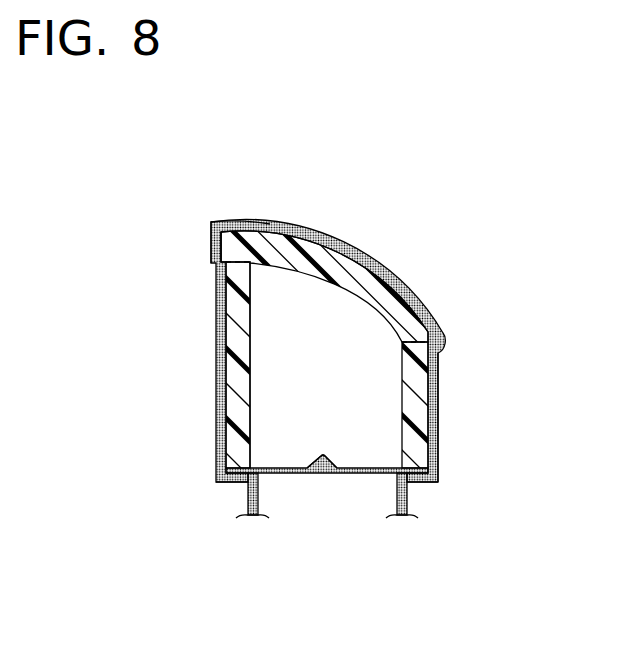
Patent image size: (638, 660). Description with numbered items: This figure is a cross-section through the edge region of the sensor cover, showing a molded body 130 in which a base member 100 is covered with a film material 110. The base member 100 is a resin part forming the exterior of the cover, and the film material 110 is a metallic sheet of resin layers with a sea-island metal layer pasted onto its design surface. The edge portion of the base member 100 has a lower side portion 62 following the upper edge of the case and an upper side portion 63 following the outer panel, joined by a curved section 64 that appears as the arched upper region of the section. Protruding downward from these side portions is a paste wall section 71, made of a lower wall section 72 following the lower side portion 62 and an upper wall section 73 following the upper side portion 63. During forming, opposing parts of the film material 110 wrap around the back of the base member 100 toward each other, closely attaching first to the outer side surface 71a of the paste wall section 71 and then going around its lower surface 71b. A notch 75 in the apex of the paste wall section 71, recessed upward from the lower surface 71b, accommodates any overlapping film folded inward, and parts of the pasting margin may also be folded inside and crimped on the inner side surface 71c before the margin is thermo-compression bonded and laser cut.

The molded body 130 is at (437, 168).
The base member 100 is at (389, 266).
The film material 110 is at (226, 223).
The lower side portion 62 is at (441, 375).
The curved section 64 is at (270, 240).
The upper side portion 63 is at (227, 243).
The paste wall section 71 is at (434, 441).
The outer side surface 71a is at (228, 385).
The lower surface 71b is at (243, 472).
The inner side surface 71c is at (251, 434).
The lower wall section 72 is at (414, 458).
The upper wall section 73 is at (233, 462).
The notch 75 is at (327, 463).